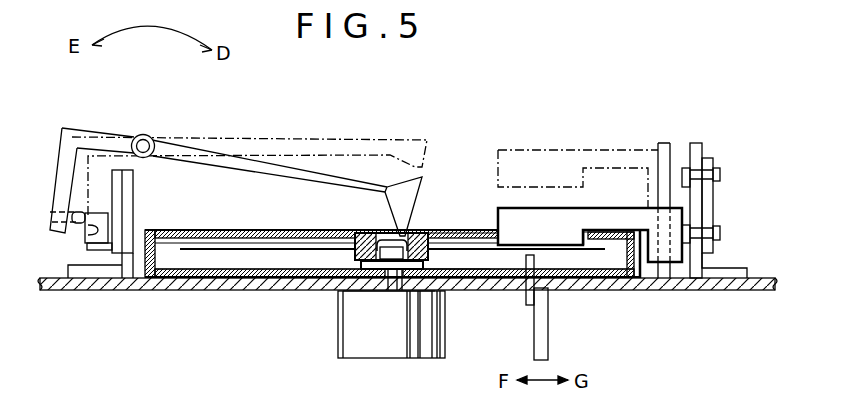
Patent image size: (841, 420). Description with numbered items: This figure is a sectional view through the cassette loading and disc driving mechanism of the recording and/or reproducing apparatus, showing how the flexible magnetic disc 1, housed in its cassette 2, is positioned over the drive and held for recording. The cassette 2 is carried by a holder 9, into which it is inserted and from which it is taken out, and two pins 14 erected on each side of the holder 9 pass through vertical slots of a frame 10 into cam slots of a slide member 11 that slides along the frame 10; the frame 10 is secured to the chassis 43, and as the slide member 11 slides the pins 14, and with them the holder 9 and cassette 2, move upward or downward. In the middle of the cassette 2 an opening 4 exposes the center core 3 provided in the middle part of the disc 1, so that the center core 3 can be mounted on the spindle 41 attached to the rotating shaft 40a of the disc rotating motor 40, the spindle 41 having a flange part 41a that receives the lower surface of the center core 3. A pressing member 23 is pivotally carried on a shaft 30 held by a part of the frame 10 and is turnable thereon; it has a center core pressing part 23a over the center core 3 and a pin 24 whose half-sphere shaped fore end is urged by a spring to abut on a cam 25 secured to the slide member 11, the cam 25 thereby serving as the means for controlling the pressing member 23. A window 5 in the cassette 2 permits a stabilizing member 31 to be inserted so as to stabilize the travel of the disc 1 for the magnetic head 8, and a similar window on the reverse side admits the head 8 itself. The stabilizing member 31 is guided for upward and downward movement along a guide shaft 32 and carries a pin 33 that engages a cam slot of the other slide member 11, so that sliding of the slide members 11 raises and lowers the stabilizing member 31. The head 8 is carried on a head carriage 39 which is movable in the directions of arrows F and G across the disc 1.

The flexible magnetic disc 1 is at (490, 235).
The cassette 2 is at (292, 238).
The center core 3 is at (425, 234).
The opening 4 is at (348, 237).
The window 5 is at (604, 231).
The magnetic head 8 is at (534, 263).
The holder 9 is at (193, 230).
The frame 10 is at (698, 143).
The slide member 11 is at (716, 205).
The pins 14 is at (128, 278).
The pressing member 23 is at (296, 165).
The center core pressing part 23a is at (410, 216).
The pin 24 is at (72, 212).
The cam 25 is at (92, 242).
The shaft 30 is at (143, 134).
The stabilizing member 31 is at (533, 209).
The guide shaft 32 is at (662, 143).
The pin 33 is at (720, 233).
The head carriage 39 is at (547, 322).
The disc rotating motor 40 is at (424, 352).
The rotating shaft 40a is at (383, 291).
The spindle 41 is at (388, 238).
The flange part 41a is at (402, 272).
The chassis 43 is at (745, 291).